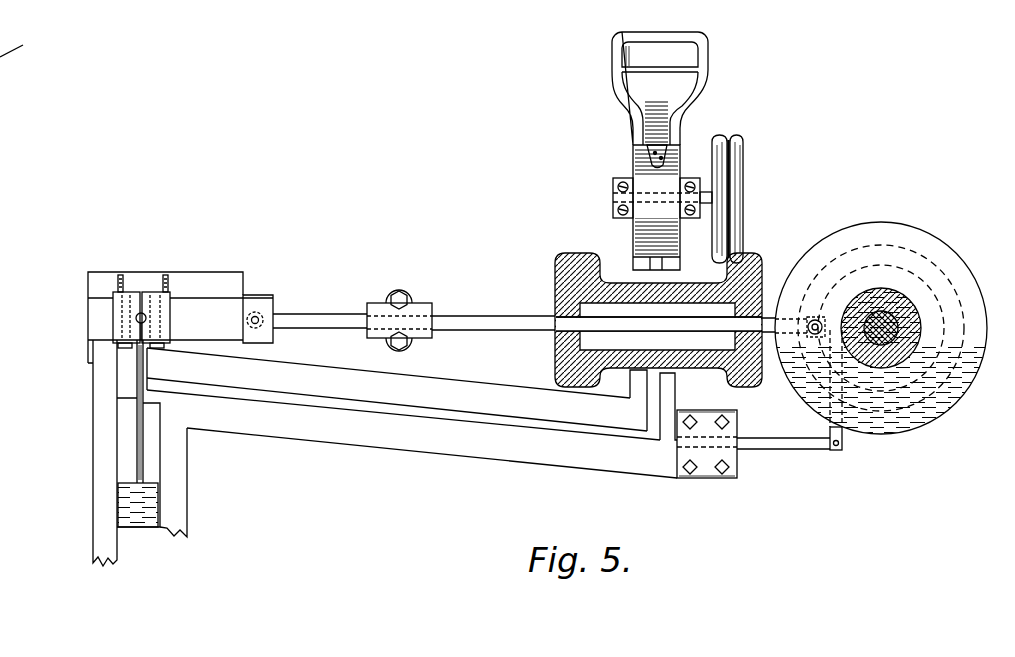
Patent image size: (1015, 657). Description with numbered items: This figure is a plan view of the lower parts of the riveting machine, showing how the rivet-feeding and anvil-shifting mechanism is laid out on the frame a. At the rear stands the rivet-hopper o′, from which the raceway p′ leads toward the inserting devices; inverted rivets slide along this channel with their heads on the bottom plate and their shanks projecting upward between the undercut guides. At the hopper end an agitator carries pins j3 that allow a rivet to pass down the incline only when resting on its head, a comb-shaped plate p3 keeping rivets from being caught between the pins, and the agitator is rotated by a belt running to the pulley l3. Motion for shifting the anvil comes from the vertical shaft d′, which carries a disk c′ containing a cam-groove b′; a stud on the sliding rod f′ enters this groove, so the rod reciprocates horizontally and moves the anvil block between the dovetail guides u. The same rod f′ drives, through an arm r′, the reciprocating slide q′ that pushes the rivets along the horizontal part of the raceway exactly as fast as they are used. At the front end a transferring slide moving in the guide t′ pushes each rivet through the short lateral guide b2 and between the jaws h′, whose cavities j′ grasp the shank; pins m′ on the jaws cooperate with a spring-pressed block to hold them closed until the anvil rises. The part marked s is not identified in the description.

The dovetail guides u is at (150, 276).
The studs or pins m′ is at (118, 283).
The jaws h′ is at (115, 312).
The cavities j′ is at (147, 320).
The lateral guide b2 is at (140, 362).
The spring rod s is at (143, 472).
The guide t′ is at (98, 514).
The sliding rod f′ is at (466, 316).
The frame a is at (555, 360).
The rivet-hopper o′ is at (633, 84).
The pins j3 is at (650, 143).
The comb-shaped plate p3 is at (660, 147).
The raceway p′ is at (650, 267).
The pulley l3 is at (744, 225).
The vertical shaft d′ is at (905, 300).
The cam-groove b′ is at (960, 330).
The disk c′ is at (942, 383).
The arm r′ is at (830, 432).
The reciprocating slide q′ is at (782, 443).